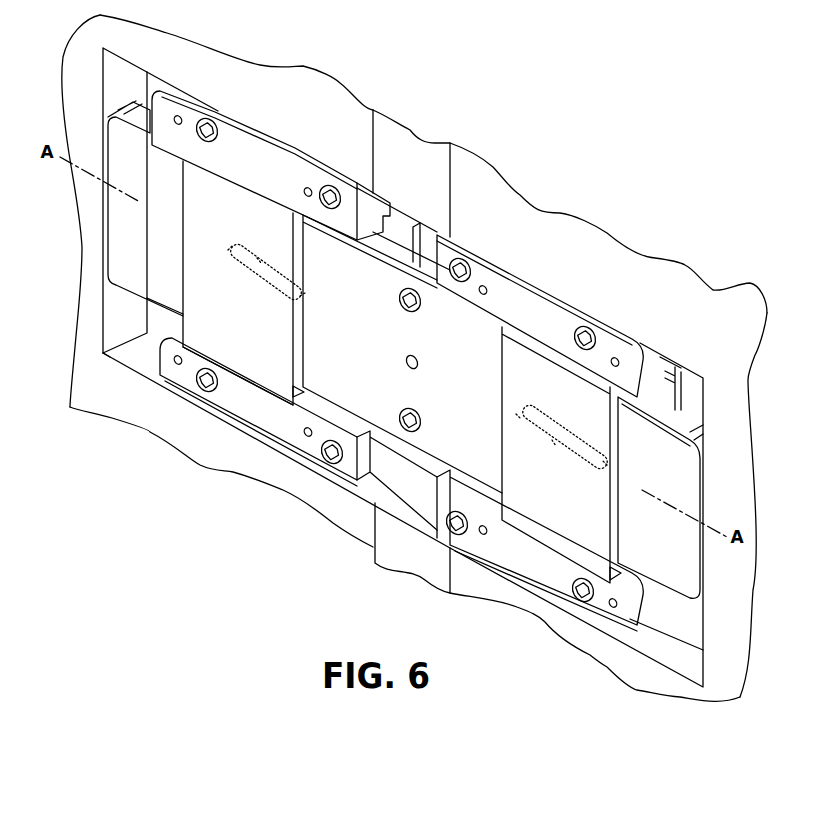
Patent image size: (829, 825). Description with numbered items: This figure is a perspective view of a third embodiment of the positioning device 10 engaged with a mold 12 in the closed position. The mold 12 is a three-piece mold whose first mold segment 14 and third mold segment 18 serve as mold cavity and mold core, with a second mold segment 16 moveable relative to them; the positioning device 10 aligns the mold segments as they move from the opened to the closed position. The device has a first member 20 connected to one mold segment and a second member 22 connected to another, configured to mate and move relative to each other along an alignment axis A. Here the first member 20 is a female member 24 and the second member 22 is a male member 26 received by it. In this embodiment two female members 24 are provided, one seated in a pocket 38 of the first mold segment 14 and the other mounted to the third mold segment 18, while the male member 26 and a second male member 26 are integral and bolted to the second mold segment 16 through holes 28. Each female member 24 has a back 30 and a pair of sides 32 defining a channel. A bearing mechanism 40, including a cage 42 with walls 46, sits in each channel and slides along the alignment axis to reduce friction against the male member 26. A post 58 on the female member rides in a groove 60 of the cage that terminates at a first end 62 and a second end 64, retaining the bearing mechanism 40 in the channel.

The positioning device 10 is at (134, 328).
The mold 12 is at (694, 272).
The first mold segment 14 is at (160, 428).
The second mold segment 16 is at (412, 150).
The third mold segment 18 is at (482, 185).
The first member 20 is at (285, 143).
The second member 22 is at (383, 440).
The female member 24 is at (233, 118).
The male member 26 is at (405, 349).
The holes 28 is at (424, 306).
The back 30 is at (690, 376).
The sides 32 is at (397, 361).
The pocket 38 is at (130, 358).
The bearing mechanism 40 is at (237, 355).
The cage 42 is at (396, 372).
The walls 46 is at (315, 412).
The post 58 is at (285, 297).
The groove 60 is at (257, 258).
The first end 62 is at (228, 250).
The second end 64 is at (305, 293).